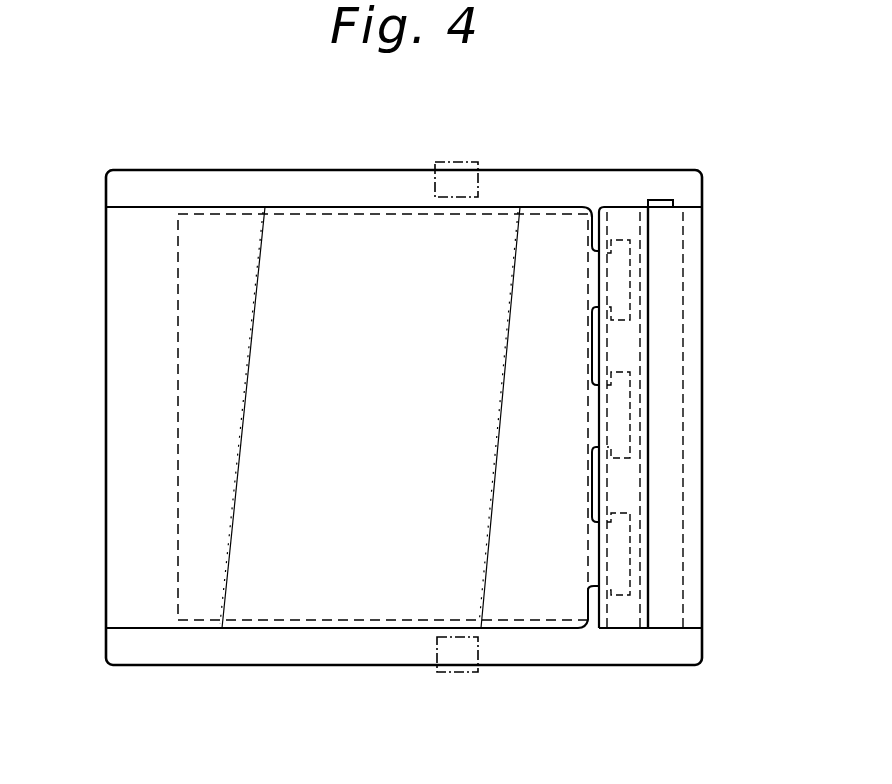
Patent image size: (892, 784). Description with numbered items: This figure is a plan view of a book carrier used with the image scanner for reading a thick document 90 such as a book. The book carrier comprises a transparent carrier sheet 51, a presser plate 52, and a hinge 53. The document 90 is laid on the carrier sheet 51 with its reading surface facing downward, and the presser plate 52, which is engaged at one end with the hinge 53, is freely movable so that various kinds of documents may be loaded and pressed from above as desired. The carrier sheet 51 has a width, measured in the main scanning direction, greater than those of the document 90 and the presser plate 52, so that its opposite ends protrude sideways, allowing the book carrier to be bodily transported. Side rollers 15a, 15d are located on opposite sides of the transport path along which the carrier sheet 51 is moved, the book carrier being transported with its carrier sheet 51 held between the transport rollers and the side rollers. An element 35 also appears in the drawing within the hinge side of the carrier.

The presser plate 52 is at (148, 220).
The transparent carrier sheet 51 is at (252, 190).
The hinge 53 is at (693, 448).
The transfer member 35 is at (672, 297).
The document 90 is at (178, 440).
The side roller 15a is at (470, 161).
The gripper 15d is at (450, 673).